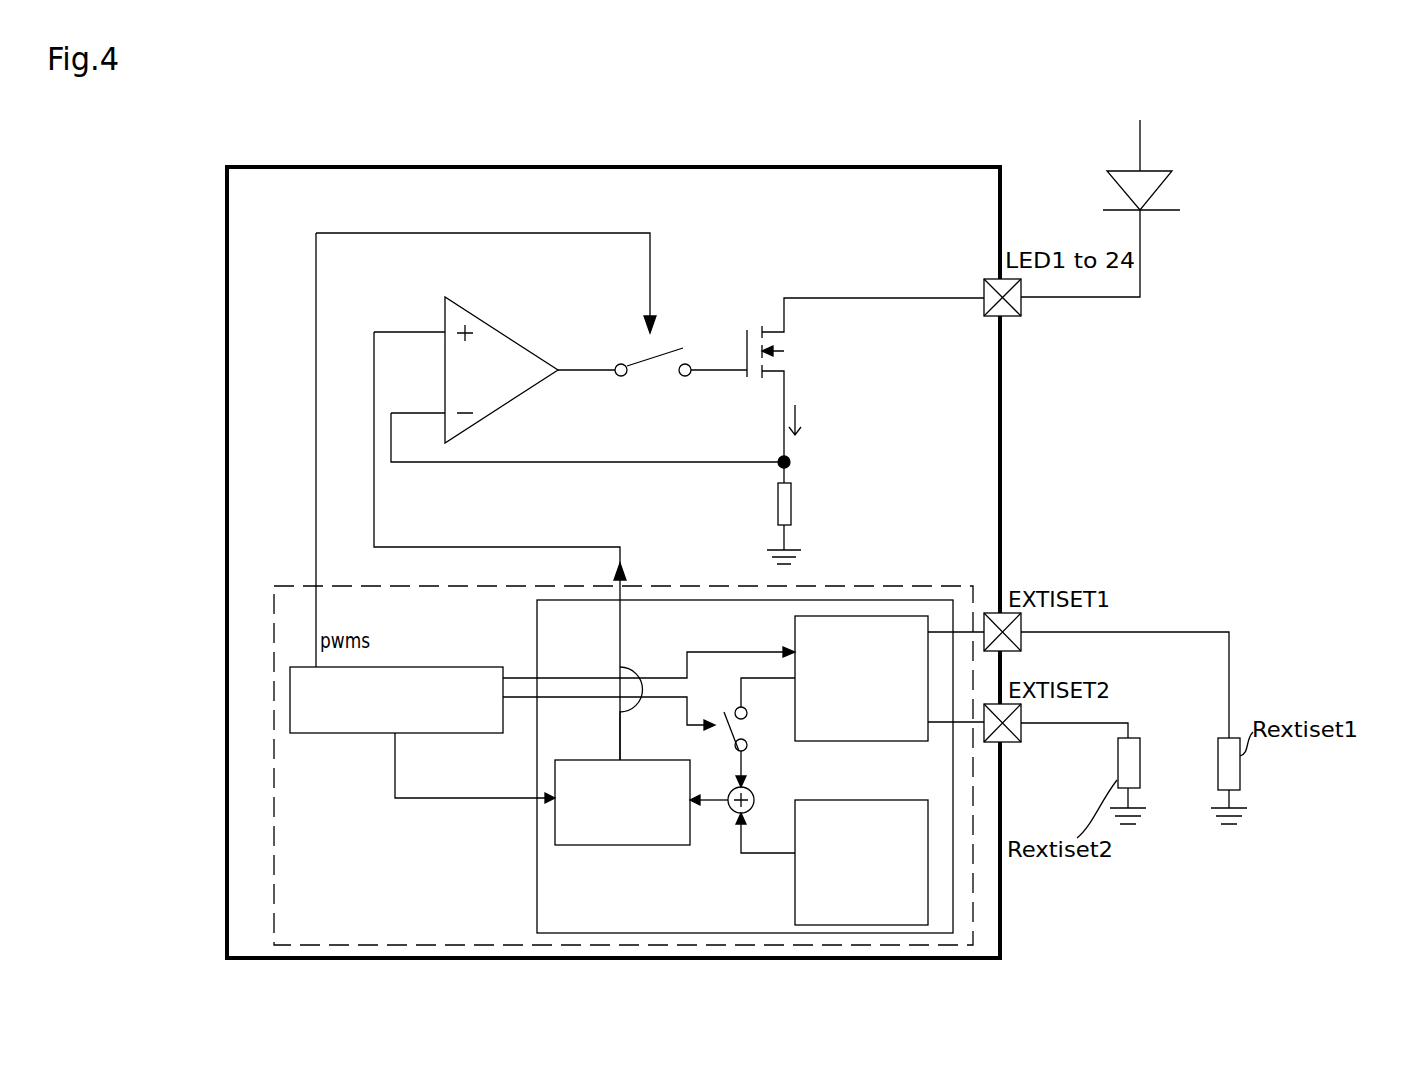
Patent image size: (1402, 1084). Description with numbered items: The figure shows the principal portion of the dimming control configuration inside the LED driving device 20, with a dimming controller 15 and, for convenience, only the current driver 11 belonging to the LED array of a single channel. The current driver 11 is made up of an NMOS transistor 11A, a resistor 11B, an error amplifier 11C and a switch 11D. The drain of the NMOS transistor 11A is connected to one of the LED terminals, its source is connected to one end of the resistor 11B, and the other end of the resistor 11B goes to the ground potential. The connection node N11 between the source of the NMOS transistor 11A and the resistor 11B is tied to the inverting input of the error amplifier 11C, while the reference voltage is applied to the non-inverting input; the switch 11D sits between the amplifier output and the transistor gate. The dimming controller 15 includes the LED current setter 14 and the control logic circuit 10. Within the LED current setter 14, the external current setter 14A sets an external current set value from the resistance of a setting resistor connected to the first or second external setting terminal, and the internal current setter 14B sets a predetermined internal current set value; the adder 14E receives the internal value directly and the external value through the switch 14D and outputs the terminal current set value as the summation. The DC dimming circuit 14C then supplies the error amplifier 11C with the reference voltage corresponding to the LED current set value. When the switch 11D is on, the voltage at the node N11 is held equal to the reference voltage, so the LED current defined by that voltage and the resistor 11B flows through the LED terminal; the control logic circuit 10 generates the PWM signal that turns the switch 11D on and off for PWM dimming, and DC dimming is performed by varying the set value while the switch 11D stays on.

The control logic circuit 10 is at (488, 667).
The current driver 11 is at (701, 488).
The NMOS transistor 11A is at (789, 348).
The resistor 11B is at (792, 500).
The error amplifier 11C is at (497, 328).
The switch 11D is at (678, 348).
The LED current setter 14 is at (537, 893).
The external current setter 14A is at (832, 742).
The internal current setter 14B is at (921, 790).
The DC dimming circuit 14C is at (671, 746).
The switch 14D is at (748, 729).
The adder 14E is at (755, 800).
The dimming controller 15 is at (938, 587).
The LED driving device 20 is at (985, 167).
The connection node N11 is at (781, 458).